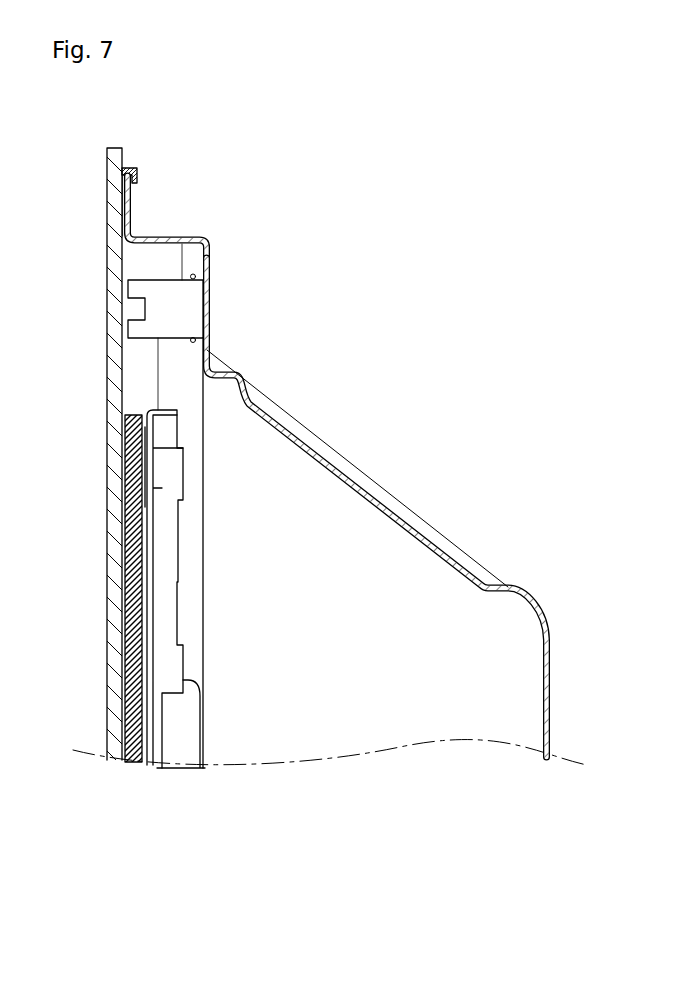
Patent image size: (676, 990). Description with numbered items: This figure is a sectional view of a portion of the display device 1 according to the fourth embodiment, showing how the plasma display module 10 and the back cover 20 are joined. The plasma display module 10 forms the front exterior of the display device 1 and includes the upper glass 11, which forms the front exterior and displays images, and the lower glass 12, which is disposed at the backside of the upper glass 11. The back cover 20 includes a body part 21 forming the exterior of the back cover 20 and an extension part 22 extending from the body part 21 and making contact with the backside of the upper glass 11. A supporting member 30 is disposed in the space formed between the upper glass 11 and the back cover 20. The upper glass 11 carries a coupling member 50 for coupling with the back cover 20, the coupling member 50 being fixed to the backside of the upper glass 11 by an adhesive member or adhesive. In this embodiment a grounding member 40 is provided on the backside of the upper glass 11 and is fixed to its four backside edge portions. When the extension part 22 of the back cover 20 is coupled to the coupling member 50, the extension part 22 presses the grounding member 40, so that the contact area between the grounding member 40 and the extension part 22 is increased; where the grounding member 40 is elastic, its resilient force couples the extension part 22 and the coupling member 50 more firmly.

The display device 1 is at (129, 124).
The plasma display module 10 is at (177, 781).
The upper glass 11 is at (112, 157).
The lower glass 12 is at (135, 764).
The back cover 20 is at (337, 457).
The body part 21 is at (410, 533).
The extension part 22 is at (128, 203).
The supporting member 30 is at (188, 305).
The grounding member 40 is at (120, 198).
The coupling member 50 is at (133, 158).